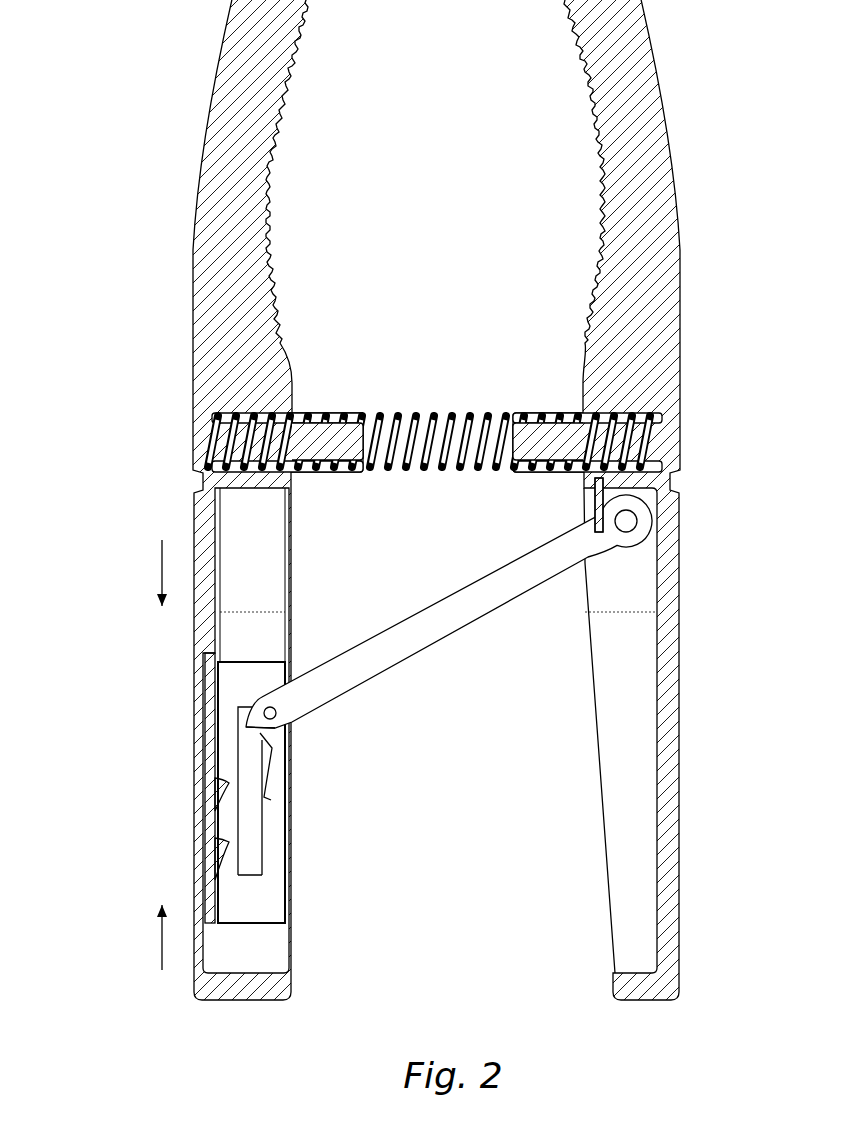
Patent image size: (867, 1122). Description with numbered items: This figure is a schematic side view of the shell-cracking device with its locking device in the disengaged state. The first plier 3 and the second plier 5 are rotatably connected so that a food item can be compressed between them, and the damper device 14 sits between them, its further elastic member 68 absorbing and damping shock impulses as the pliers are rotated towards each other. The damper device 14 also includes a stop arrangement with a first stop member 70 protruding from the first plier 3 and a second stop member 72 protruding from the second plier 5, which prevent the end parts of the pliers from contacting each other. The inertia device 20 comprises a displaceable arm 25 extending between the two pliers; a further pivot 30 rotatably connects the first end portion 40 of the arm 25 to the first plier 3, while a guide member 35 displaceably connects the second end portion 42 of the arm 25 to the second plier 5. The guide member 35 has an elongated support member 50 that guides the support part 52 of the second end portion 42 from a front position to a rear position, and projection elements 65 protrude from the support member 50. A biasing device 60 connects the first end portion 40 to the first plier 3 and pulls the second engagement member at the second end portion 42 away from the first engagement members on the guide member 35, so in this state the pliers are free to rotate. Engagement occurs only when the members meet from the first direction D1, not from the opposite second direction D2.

The first plier 3 is at (630, 923).
The second plier 5 is at (262, 950).
The damper device 14 is at (435, 382).
The inertia device 20 is at (462, 782).
The displaceable arm 25 is at (423, 633).
The further pivot 30 is at (627, 522).
The guide member 35 is at (138, 788).
The first end portion 40 is at (414, 613).
The second end portion 42 is at (316, 645).
The support member 50 is at (303, 791).
The support part 52 is at (268, 723).
The biasing device 60 is at (598, 505).
The projection element 65 is at (267, 805).
The further elastic member 68 is at (455, 413).
The first stop member 70 is at (548, 443).
The second stop member 72 is at (331, 443).
The first direction D1 is at (162, 565).
The second direction D2 is at (162, 943).